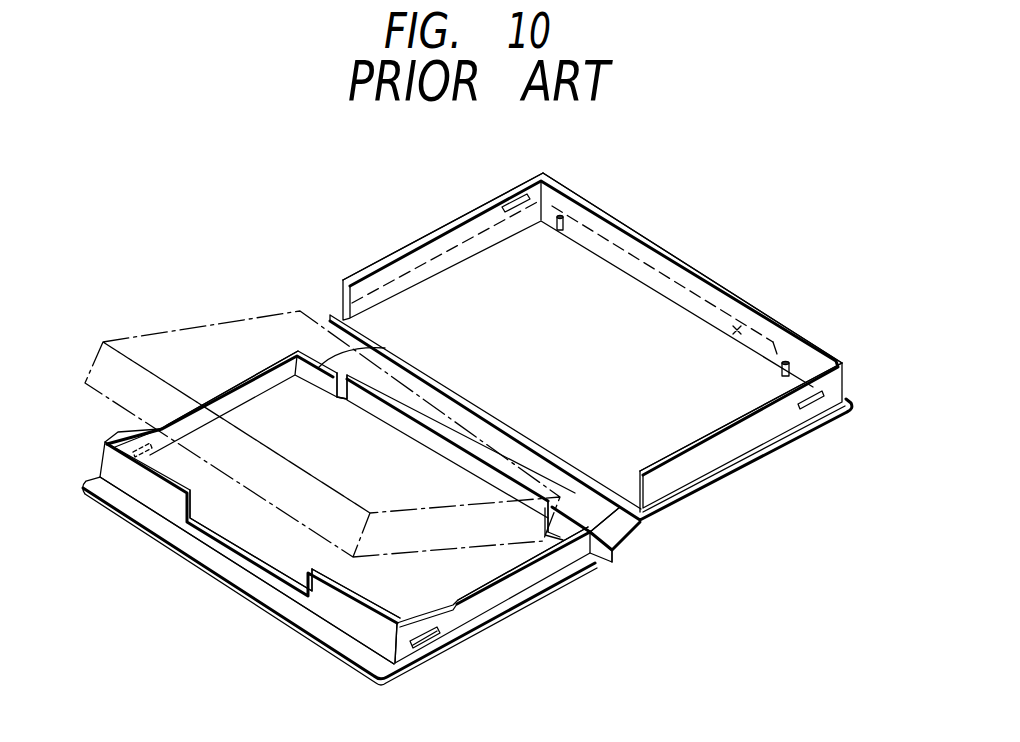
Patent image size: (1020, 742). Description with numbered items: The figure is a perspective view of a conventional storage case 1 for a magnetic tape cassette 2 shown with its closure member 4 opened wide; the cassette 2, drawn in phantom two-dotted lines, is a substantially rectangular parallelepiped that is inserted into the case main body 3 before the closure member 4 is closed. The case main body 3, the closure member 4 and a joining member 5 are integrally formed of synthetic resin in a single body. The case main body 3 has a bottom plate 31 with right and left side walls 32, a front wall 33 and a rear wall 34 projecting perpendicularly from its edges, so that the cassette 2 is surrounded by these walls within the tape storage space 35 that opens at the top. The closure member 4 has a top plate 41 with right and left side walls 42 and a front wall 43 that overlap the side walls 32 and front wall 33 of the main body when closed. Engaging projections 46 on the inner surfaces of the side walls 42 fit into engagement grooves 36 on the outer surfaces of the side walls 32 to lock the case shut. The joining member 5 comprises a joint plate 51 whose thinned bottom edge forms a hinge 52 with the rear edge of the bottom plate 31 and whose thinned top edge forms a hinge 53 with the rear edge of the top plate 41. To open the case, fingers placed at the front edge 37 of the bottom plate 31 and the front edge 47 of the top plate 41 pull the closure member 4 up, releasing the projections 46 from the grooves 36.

The storage case 1 is at (727, 281).
The magnetic tape cassette 2 is at (173, 340).
The case main body 3 is at (498, 627).
The closure member 4 is at (750, 467).
The joining member 5 is at (634, 543).
The bottom plate 31 is at (283, 553).
The side wall 32 is at (233, 397).
The front wall 33 is at (357, 620).
The rear wall 34 is at (360, 355).
The tape storage space 35 is at (187, 465).
The engagement groove 36 is at (140, 447).
The front edge 37 is at (195, 570).
The top plate 41 is at (753, 317).
The side wall 42 is at (430, 243).
The front wall 43 is at (665, 263).
The engaging projection 46 is at (510, 200).
The front edge 47 is at (777, 347).
The joint plate 51 is at (620, 556).
The hinge 52 is at (613, 535).
The hinge 53 is at (548, 506).